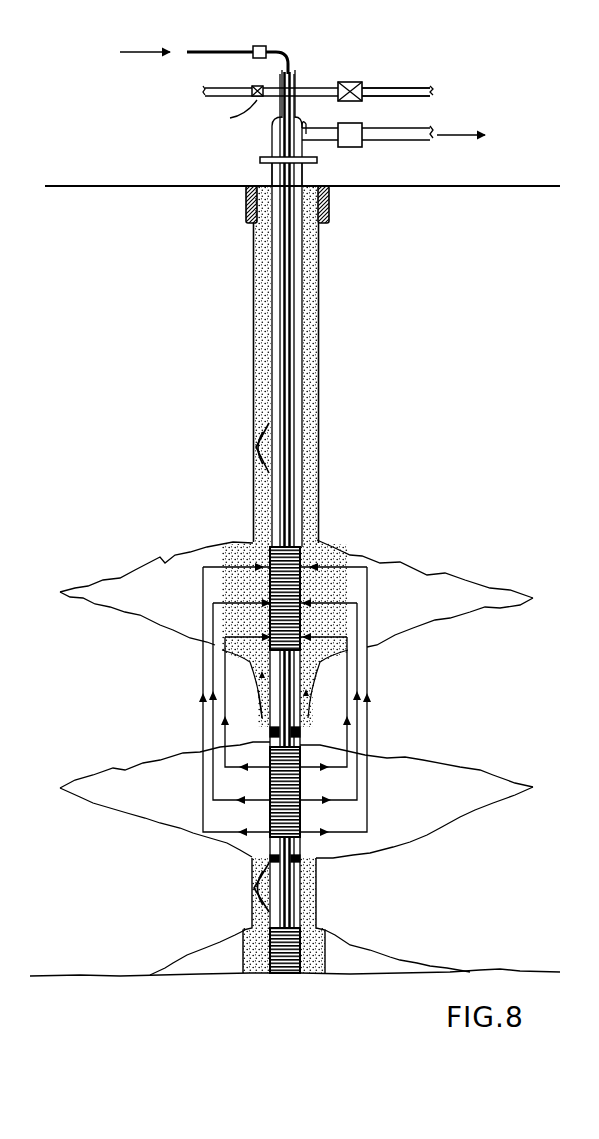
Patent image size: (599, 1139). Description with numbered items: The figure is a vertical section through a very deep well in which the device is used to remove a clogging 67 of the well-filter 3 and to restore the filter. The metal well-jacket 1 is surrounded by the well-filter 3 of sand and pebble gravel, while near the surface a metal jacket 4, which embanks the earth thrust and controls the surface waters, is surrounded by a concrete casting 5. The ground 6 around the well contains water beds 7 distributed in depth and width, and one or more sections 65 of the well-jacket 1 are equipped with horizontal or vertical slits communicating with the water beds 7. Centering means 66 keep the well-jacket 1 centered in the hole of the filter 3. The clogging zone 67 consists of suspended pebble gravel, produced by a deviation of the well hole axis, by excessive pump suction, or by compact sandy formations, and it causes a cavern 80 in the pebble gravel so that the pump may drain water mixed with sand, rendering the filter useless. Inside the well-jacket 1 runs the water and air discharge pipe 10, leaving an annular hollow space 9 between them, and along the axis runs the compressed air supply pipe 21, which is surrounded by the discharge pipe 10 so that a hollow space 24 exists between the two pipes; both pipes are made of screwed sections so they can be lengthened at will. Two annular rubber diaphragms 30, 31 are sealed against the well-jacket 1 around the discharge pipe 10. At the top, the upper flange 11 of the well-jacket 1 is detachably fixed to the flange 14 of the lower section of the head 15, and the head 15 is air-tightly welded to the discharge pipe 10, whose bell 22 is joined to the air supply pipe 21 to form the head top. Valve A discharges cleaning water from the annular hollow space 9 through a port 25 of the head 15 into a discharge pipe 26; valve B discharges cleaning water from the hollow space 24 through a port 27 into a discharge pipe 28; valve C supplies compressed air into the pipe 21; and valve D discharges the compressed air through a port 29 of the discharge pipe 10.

The compressed air supply valve C is at (260, 45).
The bell 22 is at (296, 72).
The port 27 is at (296, 88).
The port 29 is at (244, 79).
The cleaning water discharge valve B is at (354, 84).
The discharge pipe 28 is at (410, 92).
The compressed air discharge valve D is at (231, 115).
The head 15 is at (272, 133).
The port 25 is at (303, 133).
The discharge pipe 26 is at (393, 133).
The well cleaning water discharge valve A is at (350, 145).
The flange 14 is at (266, 156).
The upper flange 11 is at (270, 166).
The concrete casting 5 is at (247, 200).
The ground 6 is at (100, 253).
The metal jacket 4 is at (258, 237).
The well-jacket 1 is at (272, 283).
The hollow space 24 is at (290, 316).
The well-filter 3 is at (263, 335).
The annular hollow space 9 is at (297, 348).
The compressed air supply pipe 21 is at (285, 377).
The water and air discharge pipe 10 is at (295, 388).
The centering means 66 is at (260, 434).
The water beds 7 is at (120, 590).
The slitted sections of well-jacket 65 is at (302, 618).
The clogging zone 67 is at (262, 718).
The annular rubber diaphragm 31 is at (302, 728).
The cavern 80 is at (330, 793).
The annular rubber diaphragm 30 is at (300, 858).